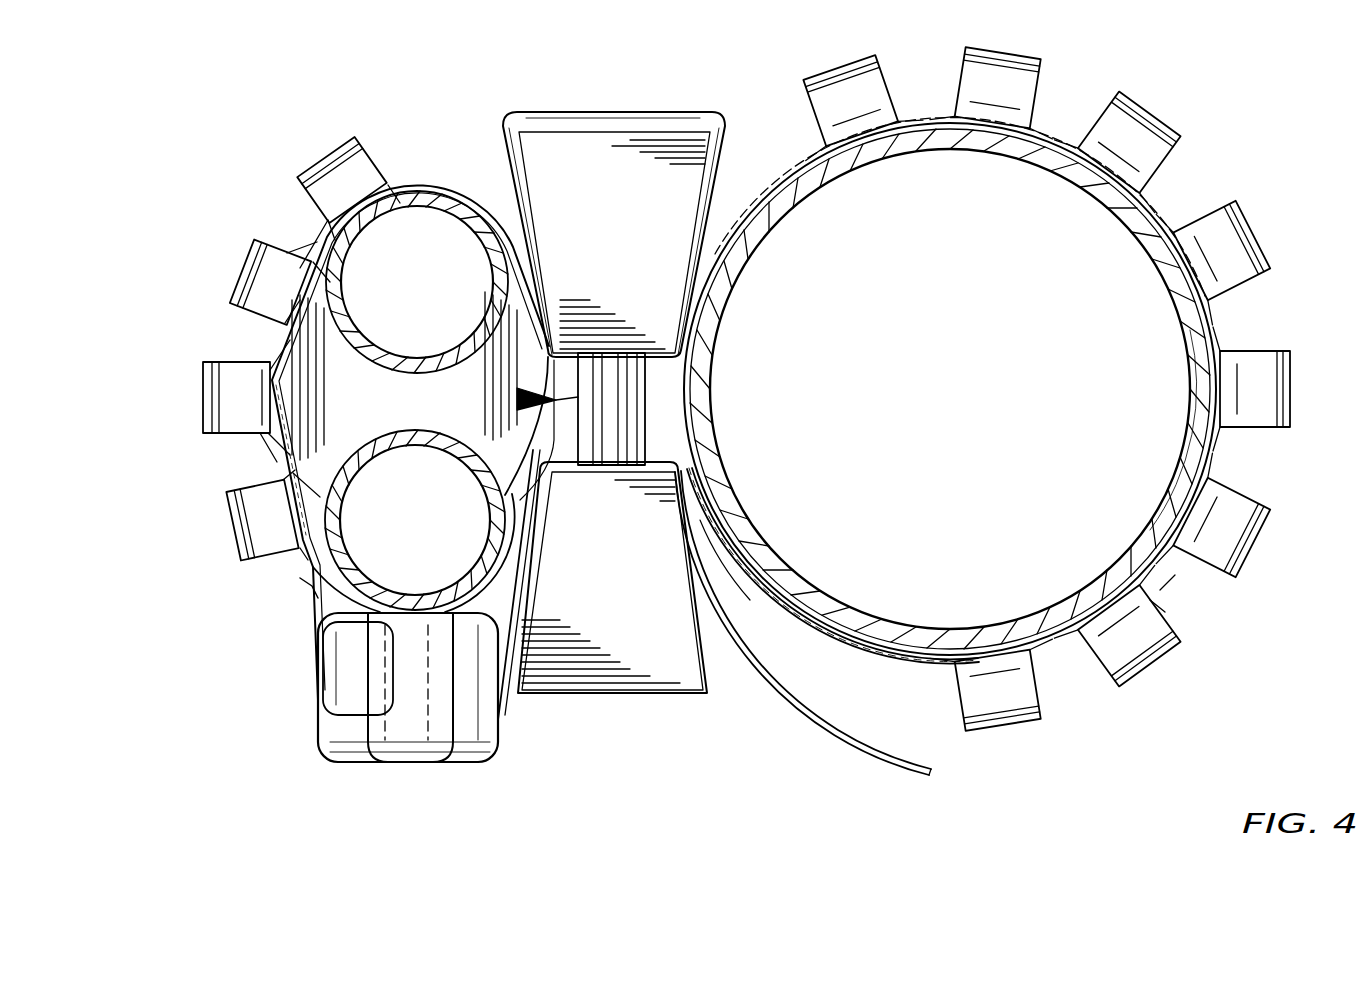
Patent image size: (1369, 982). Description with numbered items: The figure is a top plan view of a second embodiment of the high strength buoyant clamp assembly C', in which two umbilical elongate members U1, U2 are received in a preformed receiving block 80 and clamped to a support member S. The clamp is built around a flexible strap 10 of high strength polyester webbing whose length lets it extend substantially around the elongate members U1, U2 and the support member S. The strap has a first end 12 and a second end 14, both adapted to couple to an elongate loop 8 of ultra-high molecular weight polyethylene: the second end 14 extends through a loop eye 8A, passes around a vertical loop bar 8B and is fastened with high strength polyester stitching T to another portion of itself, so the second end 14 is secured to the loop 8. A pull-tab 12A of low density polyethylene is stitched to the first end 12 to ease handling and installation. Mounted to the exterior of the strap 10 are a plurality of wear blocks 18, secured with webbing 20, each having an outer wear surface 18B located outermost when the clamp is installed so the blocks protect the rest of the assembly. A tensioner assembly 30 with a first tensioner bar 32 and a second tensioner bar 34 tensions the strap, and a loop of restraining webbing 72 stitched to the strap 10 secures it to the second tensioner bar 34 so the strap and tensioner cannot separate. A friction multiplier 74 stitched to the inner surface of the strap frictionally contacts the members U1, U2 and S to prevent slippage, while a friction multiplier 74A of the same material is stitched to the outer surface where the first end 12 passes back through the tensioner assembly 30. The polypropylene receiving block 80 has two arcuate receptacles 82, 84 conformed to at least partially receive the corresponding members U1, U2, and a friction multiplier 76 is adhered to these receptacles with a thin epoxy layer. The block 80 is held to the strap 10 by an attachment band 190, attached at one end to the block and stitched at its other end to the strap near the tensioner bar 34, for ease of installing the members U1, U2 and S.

The elongate loop 8 is at (318, 745).
The loop eye 8A is at (388, 755).
The vertical loop bar 8B is at (342, 670).
The flexible strap 10 is at (882, 657).
The first end 12 is at (692, 510).
The pull-tab 12A is at (857, 755).
The second end 14 is at (305, 625).
The wear blocks 18 is at (340, 160).
The outer wear surface 18B is at (1262, 560).
The webbing 20 is at (252, 325).
The tensioner assembly 30 is at (560, 125).
The first tensioner bar 32 is at (590, 695).
The second tensioner bar 34 is at (653, 150).
The restraining webbing 72 is at (604, 112).
The friction multiplier 74 is at (1035, 160).
The friction multiplier 74A is at (725, 540).
The friction multiplier 76 is at (255, 372).
The preformed receiving block 80 is at (300, 428).
The receptacle 82 is at (366, 352).
The receptacle 84 is at (426, 430).
The attachment band 190 is at (562, 405).
The clamp assembly C' is at (1226, 161).
The support member S is at (1185, 345).
The stitching T is at (300, 580).
The elongate member U1 is at (372, 213).
The elongate member U2 is at (380, 452).